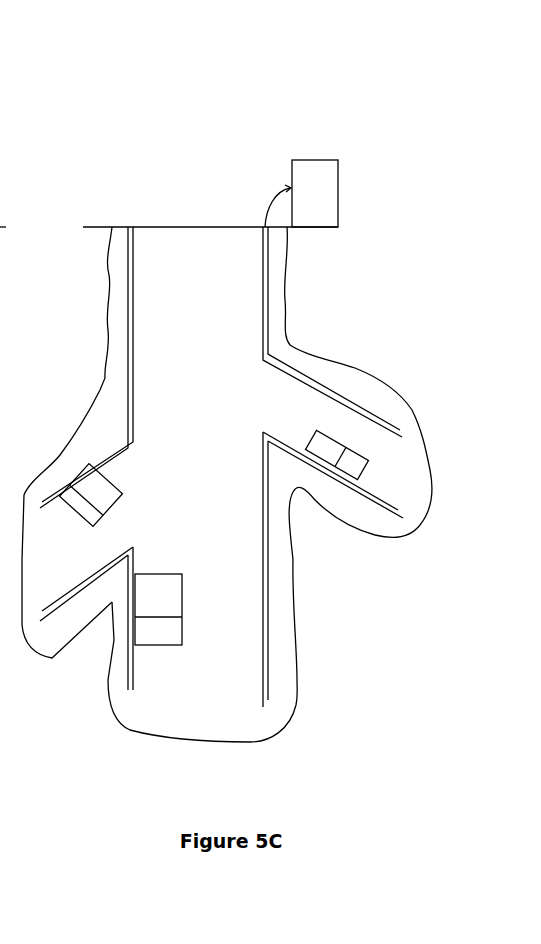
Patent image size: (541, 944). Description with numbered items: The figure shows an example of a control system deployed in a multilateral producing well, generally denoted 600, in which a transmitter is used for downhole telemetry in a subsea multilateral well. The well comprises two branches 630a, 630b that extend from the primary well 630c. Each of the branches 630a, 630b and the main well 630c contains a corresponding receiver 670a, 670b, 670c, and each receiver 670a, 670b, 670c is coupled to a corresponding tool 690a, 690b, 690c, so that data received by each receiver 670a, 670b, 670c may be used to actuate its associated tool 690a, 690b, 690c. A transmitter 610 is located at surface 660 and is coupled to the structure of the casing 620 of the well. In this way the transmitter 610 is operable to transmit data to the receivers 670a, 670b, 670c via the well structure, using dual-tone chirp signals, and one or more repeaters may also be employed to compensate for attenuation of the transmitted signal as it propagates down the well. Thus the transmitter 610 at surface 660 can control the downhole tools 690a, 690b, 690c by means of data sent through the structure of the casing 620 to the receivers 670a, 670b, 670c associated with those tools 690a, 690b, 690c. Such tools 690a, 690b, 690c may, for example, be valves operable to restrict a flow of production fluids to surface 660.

The control system deployed in a multilateral producing well 600 is at (181, 128).
The transmitter 610 is at (315, 160).
The casing 620 is at (263, 262).
The surface 660 is at (92, 227).
The branch 630a is at (355, 368).
The branch 630b is at (107, 380).
The primary well 630c is at (295, 682).
The receiver 670a is at (313, 462).
The receiver 670b is at (90, 475).
The receiver 670c is at (140, 598).
The tool 690a is at (360, 467).
The tool 690b is at (65, 502).
The tool 690c is at (157, 632).